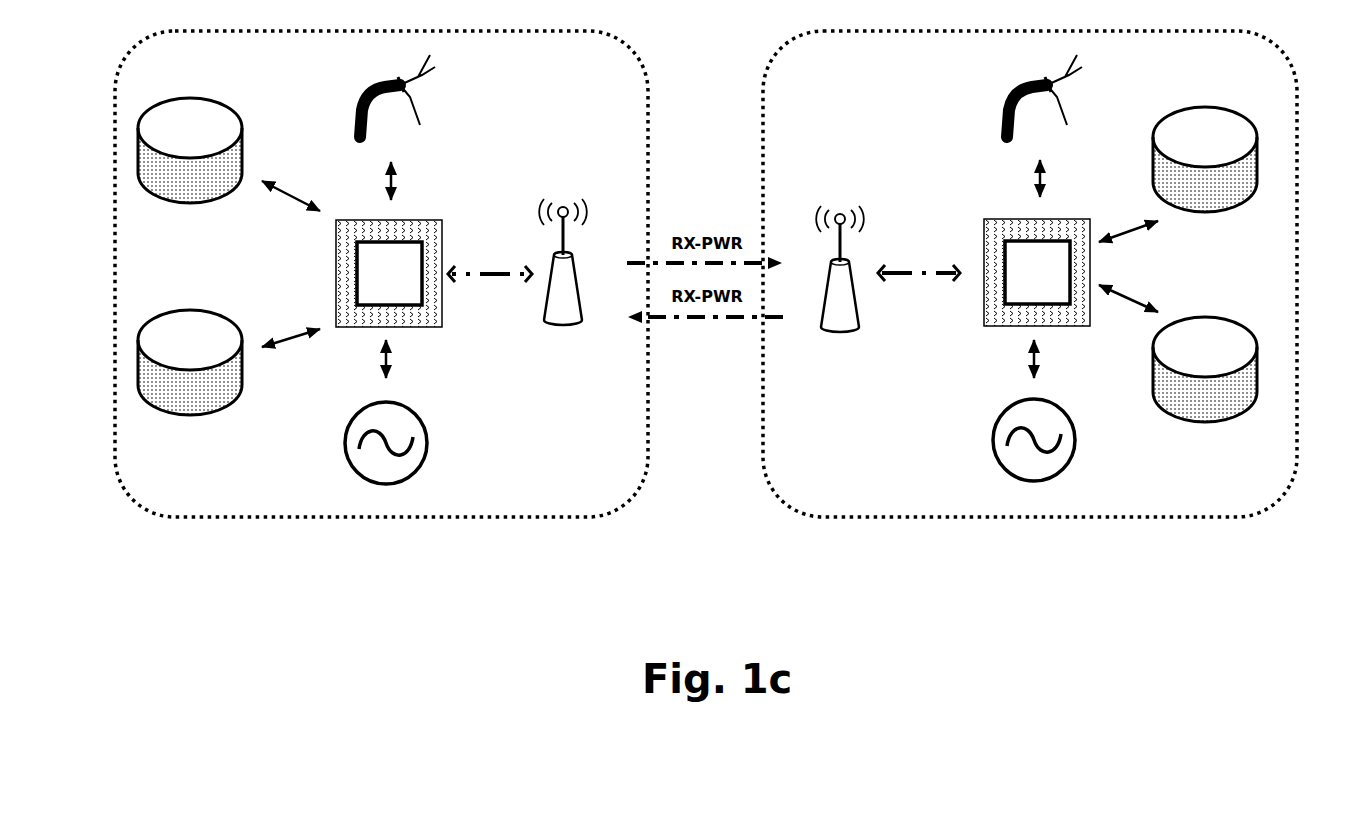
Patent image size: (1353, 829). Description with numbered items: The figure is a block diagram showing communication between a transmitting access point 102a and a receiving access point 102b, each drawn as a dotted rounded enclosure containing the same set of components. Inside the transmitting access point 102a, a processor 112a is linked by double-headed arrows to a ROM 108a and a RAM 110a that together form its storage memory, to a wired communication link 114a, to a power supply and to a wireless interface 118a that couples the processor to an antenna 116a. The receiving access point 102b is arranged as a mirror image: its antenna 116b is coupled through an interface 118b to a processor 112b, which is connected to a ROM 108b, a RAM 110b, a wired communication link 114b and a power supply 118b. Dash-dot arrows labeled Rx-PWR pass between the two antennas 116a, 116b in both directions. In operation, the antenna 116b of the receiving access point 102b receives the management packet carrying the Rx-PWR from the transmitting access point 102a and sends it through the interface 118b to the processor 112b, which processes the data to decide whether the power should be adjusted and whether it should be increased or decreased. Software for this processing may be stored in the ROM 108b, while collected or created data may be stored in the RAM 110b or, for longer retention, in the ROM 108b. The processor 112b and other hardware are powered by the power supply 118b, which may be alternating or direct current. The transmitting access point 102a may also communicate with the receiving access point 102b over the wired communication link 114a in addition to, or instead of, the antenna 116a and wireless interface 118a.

The transmitting access point 102a is at (584, 83).
The ROM 108a is at (229, 160).
The RAM 110a is at (229, 373).
The processor 112a is at (400, 299).
The wired communication link 114a is at (411, 127).
The antenna 116a is at (577, 281).
The wireless interface / power supply 118a is at (438, 382).
The receiving access point 102b is at (1238, 83).
The ROM 108b is at (1197, 174).
The RAM 110b is at (1197, 364).
The processor 112b is at (1051, 298).
The wired communication link 114b is at (1059, 126).
The antenna 116b is at (854, 286).
The interface / power supply 118b is at (998, 381).